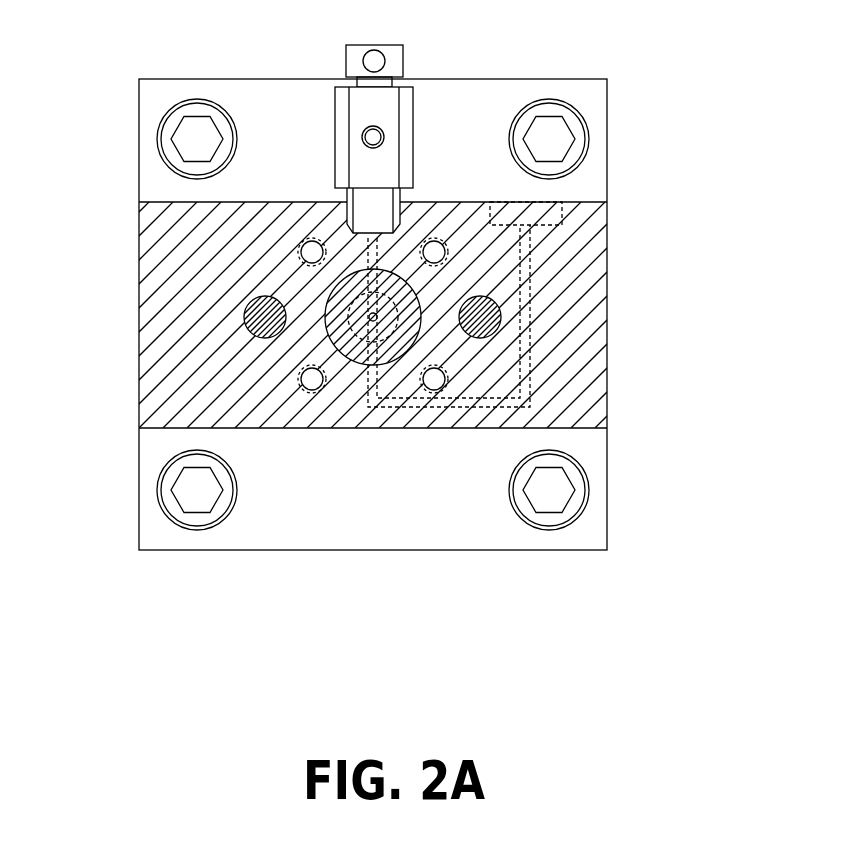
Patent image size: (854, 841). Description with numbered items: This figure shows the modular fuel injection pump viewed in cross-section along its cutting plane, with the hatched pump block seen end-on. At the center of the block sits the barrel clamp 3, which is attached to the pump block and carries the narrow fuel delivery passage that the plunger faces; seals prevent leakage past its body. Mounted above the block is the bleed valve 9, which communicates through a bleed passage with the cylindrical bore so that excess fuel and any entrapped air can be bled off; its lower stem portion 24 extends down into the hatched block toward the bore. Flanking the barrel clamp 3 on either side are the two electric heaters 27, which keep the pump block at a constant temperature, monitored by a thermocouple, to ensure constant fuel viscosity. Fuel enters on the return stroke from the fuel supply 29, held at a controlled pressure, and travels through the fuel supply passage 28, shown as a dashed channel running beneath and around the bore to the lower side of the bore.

The barrel clamp 3 is at (330, 343).
The bleed valve 9 is at (335, 118).
The probe stem 24 is at (362, 245).
The electric heaters 27 is at (245, 316).
The fuel supply passage 28 is at (530, 328).
The fuel supply 29 is at (562, 216).